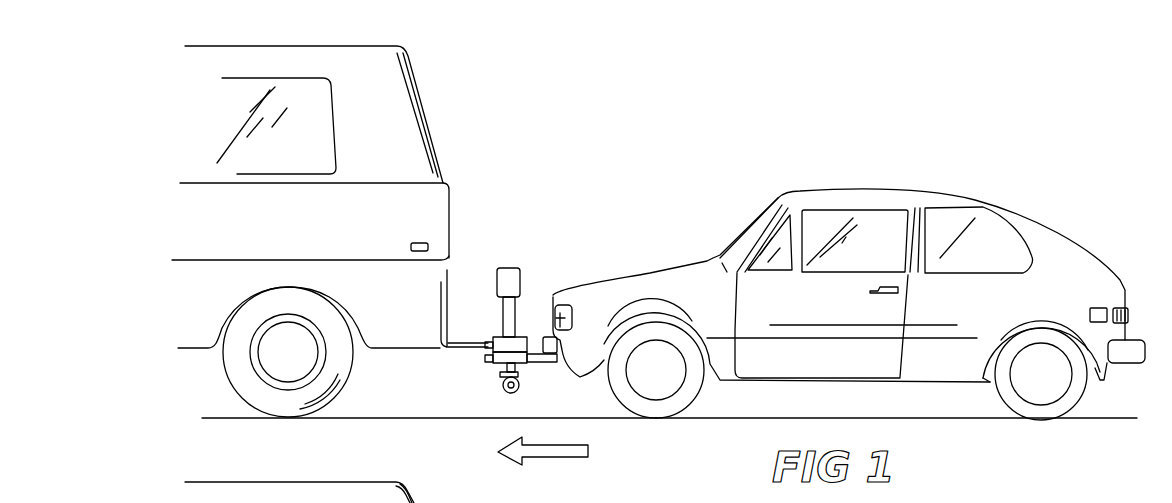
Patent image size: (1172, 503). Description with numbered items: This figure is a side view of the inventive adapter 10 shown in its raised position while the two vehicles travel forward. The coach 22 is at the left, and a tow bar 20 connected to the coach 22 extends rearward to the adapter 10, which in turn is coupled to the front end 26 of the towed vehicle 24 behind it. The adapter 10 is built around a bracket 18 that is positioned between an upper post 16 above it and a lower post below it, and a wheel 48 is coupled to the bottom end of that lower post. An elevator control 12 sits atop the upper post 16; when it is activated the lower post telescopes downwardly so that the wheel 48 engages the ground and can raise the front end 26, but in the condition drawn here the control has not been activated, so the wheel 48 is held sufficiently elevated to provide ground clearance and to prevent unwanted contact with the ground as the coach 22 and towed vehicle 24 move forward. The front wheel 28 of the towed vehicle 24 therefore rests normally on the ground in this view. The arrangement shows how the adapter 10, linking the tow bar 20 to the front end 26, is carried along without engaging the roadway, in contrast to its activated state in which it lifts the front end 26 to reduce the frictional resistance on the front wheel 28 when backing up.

The adapter 10 is at (536, 276).
The elevator control 12 is at (500, 283).
The upper post 16 is at (513, 310).
The bracket 18 is at (500, 337).
The tow bar 20 is at (450, 352).
The coach 22 is at (462, 111).
The towed vehicle 24 is at (849, 305).
The front end 26 is at (602, 350).
The front wheel 28 is at (690, 397).
The wheel 48 is at (517, 387).